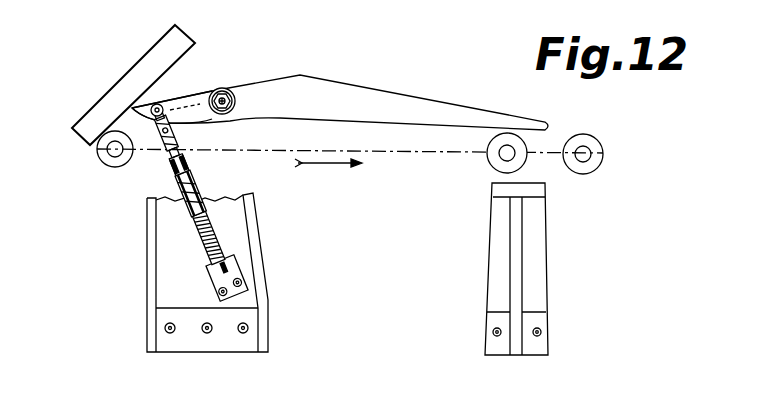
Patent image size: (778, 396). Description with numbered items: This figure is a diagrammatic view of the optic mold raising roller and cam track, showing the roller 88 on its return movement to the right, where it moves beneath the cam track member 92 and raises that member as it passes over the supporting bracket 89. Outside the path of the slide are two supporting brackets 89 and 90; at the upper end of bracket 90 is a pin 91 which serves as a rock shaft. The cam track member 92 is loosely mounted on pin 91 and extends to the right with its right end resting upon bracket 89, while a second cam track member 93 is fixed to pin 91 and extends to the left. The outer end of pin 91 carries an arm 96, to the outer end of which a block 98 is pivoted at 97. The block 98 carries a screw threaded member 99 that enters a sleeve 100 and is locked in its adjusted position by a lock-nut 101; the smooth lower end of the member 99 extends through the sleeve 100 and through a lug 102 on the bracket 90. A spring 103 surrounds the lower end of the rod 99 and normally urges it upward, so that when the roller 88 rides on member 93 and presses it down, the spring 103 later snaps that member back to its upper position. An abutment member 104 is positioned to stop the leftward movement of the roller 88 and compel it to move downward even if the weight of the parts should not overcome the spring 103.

The roller 88 is at (494, 159).
The supporting bracket 89 is at (540, 304).
The supporting bracket 90 is at (268, 332).
The pin 91 is at (236, 101).
The cam track member 92 is at (428, 101).
The cam track member 93 is at (158, 105).
The arm 96 is at (193, 92).
The pivot 97 is at (158, 117).
The block 98 is at (146, 134).
The screw threaded member 99 is at (174, 144).
The sleeve 100 is at (197, 192).
The lock-nut 101 is at (190, 165).
The lug 102 is at (233, 262).
The spring 103 is at (202, 227).
The abutment member 104 is at (168, 46).